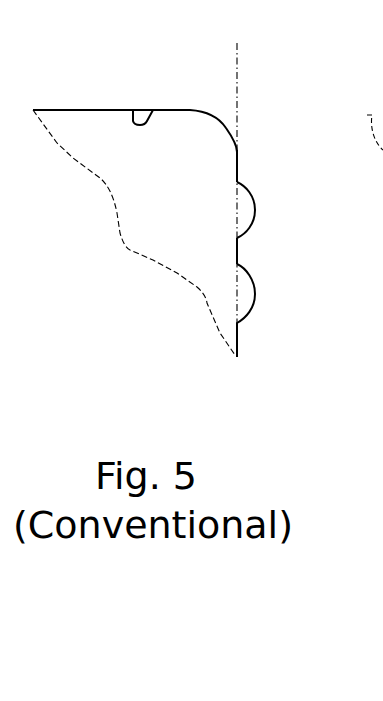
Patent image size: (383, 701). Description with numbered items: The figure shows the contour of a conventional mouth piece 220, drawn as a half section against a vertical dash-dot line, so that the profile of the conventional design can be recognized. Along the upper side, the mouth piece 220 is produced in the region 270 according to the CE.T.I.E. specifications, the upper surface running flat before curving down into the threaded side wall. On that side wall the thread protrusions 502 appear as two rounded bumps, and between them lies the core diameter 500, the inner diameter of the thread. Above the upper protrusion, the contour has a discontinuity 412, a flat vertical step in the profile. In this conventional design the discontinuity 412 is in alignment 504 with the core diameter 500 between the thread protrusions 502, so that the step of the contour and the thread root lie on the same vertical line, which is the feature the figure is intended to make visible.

The conventional mouth piece 220 is at (172, 70).
The region of the upper side 270 is at (60, 109).
The alignment 504 is at (239, 62).
The discontinuity 412 is at (240, 152).
The thread protrusions 502 is at (256, 212).
The core diameter 500 is at (239, 252).